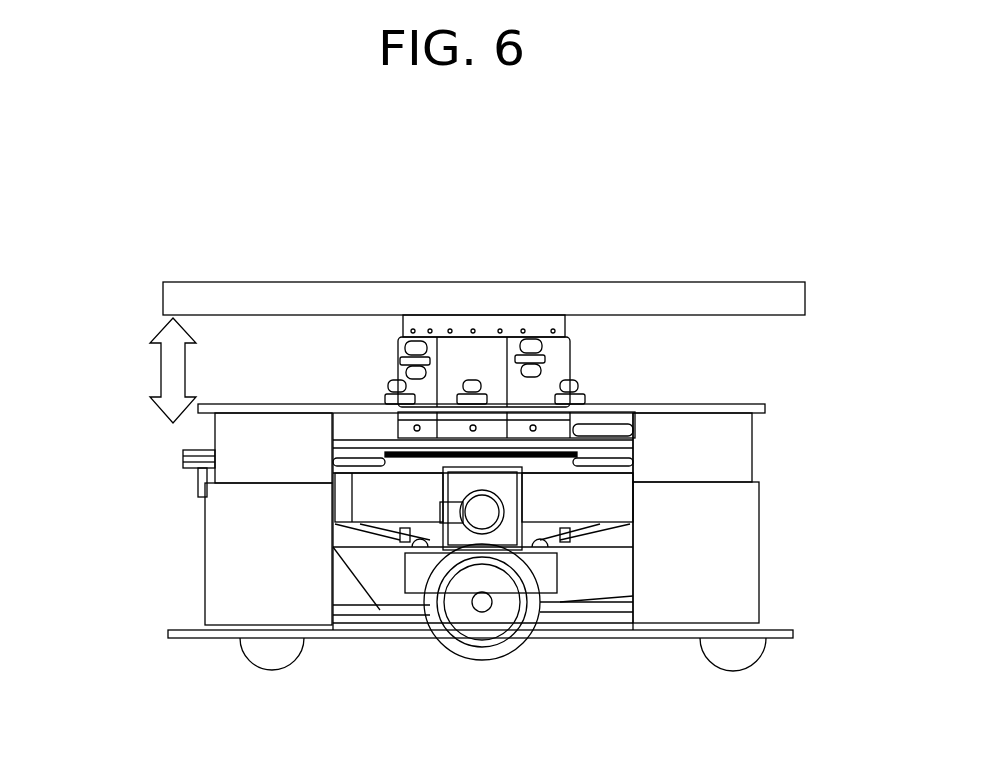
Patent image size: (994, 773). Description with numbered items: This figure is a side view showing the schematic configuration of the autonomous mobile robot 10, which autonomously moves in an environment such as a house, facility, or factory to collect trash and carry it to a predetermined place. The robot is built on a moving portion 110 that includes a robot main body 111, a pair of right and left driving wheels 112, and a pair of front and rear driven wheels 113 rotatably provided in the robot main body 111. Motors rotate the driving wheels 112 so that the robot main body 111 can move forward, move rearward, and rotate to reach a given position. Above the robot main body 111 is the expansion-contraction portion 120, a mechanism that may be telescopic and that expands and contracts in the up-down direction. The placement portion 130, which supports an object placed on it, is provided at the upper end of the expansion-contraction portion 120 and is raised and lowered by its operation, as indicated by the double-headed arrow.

The autonomous mobile robot 10 is at (750, 155).
The placement portion 130 is at (224, 298).
The expansion-contraction portion 120 is at (572, 358).
The robot main body 111 is at (748, 441).
The moving portion 110 is at (140, 513).
The driving wheel 112 is at (482, 662).
The driven wheel 113 is at (272, 660).